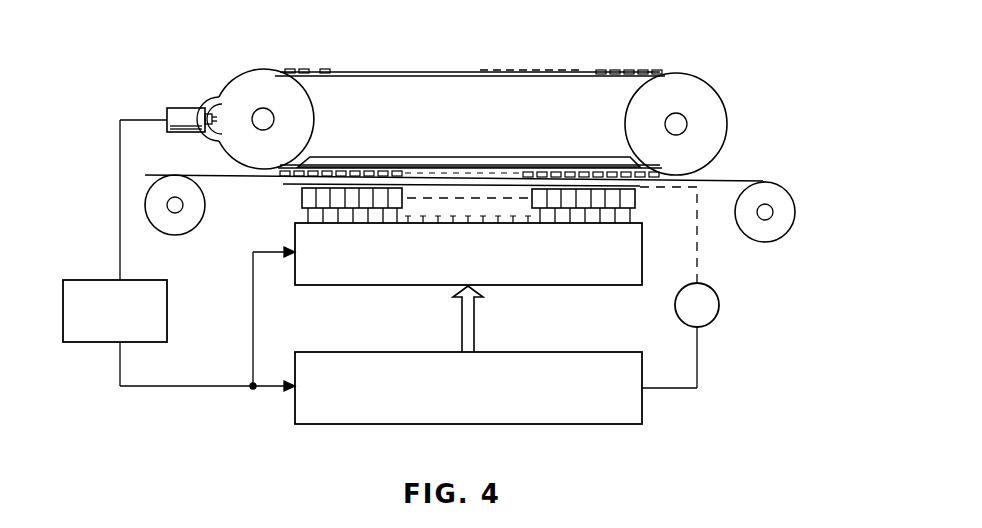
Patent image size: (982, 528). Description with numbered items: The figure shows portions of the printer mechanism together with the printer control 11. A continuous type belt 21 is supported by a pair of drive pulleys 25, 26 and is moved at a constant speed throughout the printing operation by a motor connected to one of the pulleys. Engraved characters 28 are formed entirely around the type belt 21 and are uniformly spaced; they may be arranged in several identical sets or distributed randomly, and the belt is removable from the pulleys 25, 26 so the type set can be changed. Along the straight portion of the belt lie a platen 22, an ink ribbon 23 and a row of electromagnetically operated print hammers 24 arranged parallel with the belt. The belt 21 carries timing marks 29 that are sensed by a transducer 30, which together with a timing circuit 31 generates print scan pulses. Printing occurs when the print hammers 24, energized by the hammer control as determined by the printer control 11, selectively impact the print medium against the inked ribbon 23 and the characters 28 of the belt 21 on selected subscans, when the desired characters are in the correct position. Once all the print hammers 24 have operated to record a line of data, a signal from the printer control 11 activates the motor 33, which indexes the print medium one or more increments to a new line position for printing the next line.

The printer control 11 is at (616, 354).
The continuous type belt 21 is at (508, 57).
The platen 22 is at (460, 161).
The ink ribbon 23 is at (738, 181).
The print hammers 24 is at (302, 198).
The drive pulley 25 is at (255, 75).
The drive pulley 26 is at (701, 96).
The engraved characters 28 is at (309, 69).
The timing marks 29 is at (213, 113).
The transducer 30 is at (177, 108).
The timing circuit 31 is at (148, 278).
The motor 33 is at (719, 303).